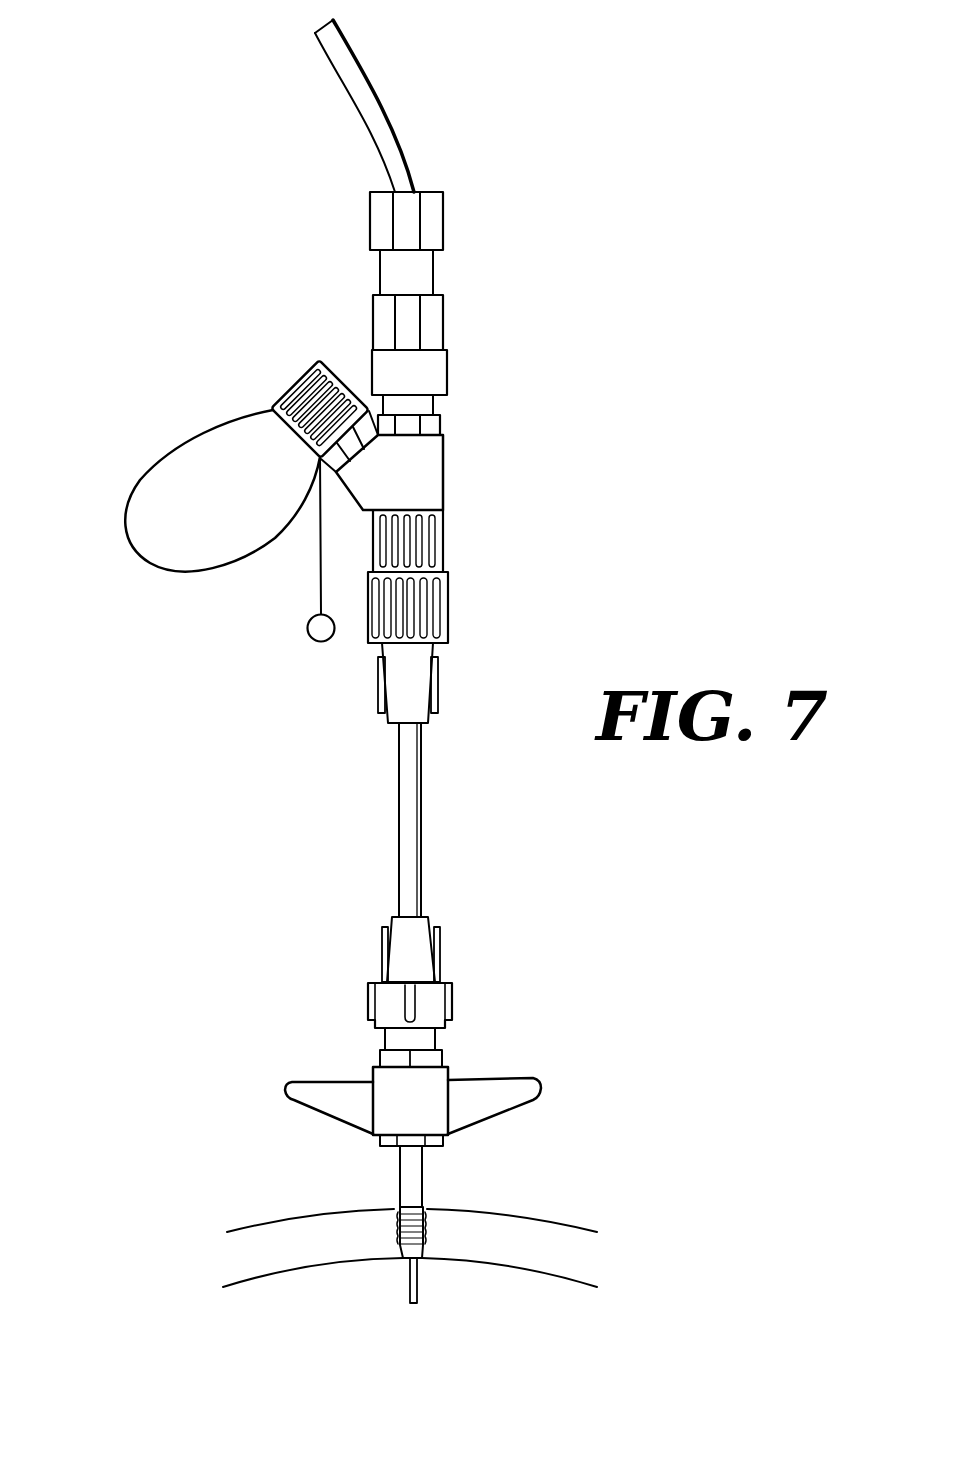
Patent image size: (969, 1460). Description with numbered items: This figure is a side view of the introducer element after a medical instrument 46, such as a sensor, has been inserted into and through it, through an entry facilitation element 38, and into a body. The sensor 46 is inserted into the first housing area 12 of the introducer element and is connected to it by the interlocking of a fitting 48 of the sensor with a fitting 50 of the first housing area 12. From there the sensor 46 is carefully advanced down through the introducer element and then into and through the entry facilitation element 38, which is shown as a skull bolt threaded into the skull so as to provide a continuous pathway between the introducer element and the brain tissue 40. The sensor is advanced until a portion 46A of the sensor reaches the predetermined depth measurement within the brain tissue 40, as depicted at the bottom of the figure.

The first housing area 12 is at (515, 347).
The entry facilitation element 38 is at (377, 1248).
The brain tissue 40 is at (246, 1305).
The medical instrument 46 is at (462, 347).
The portion of the sensor 46A is at (403, 1278).
The fitting of the sensor 48 is at (368, 295).
The fitting of the first housing area 50 is at (450, 350).